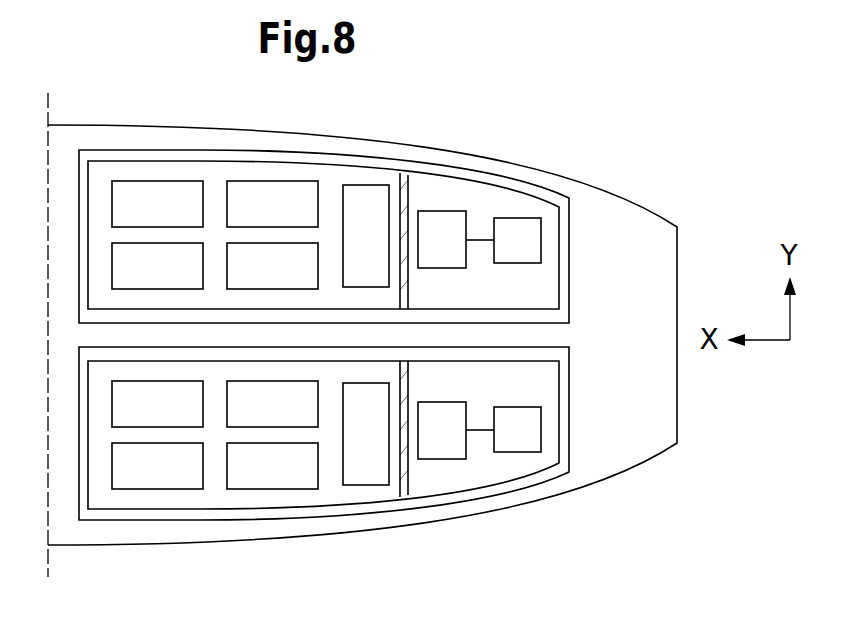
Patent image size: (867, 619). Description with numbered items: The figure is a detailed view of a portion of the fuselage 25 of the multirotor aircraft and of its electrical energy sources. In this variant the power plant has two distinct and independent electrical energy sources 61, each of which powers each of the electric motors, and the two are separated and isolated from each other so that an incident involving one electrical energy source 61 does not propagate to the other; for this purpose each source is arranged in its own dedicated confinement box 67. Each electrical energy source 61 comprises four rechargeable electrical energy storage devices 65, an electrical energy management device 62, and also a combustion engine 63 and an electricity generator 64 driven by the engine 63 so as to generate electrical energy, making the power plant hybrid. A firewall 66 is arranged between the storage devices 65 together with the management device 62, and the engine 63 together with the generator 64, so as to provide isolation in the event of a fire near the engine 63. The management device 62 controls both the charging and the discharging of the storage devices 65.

The fuselage 25 is at (645, 208).
The electrical energy source 61 is at (173, 161).
The electrical energy management device 62 is at (381, 447).
The combustion engine 63 is at (457, 443).
The electricity generator 64 is at (532, 443).
The rechargeable electrical energy storage device 65 is at (287, 479).
The firewall 66 is at (403, 194).
The confinement box 67 is at (540, 187).